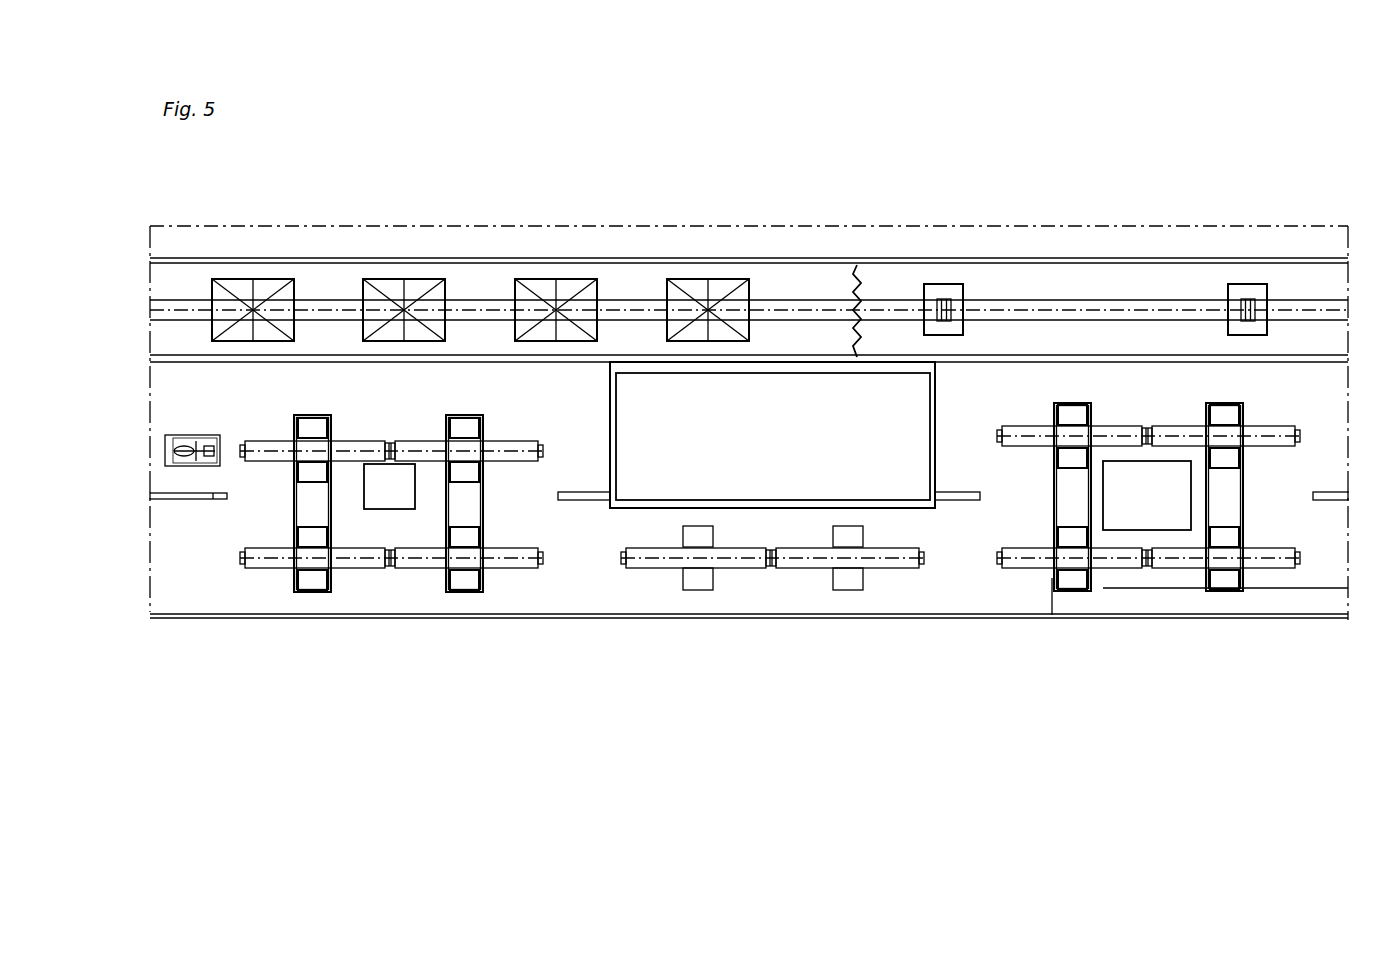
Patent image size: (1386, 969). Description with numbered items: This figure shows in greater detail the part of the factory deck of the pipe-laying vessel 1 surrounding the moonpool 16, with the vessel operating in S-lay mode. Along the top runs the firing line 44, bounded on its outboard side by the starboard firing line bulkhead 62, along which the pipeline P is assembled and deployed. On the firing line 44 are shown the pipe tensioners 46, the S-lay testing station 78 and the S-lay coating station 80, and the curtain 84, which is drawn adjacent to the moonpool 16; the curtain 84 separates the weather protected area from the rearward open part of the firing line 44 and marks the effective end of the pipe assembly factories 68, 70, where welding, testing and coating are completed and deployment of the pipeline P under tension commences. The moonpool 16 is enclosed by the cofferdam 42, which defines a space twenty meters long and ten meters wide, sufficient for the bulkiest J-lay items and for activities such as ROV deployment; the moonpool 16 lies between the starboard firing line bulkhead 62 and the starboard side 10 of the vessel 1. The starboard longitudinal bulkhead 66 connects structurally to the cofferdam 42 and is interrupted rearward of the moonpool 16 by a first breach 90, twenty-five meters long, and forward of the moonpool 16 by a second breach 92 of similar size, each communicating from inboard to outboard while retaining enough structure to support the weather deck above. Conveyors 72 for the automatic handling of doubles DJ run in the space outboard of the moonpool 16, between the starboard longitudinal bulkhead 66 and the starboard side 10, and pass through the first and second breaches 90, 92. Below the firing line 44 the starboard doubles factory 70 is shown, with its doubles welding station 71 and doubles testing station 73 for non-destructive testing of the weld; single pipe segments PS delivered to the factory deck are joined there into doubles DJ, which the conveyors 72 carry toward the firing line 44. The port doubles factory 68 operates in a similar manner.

The pipe-laying vessel 1 is at (1128, 128).
The starboard side 10 is at (917, 615).
The moonpool 16 is at (745, 437).
The cofferdam 42 is at (933, 450).
The firing line 44 is at (470, 310).
The pipe tensioners 46 is at (567, 292).
The starboard firing line bulkhead 62 is at (1366, 423).
The starboard longitudinal bulkhead 66 is at (210, 513).
The port doubles factory 68 is at (300, 199).
The starboard doubles factory 70 is at (438, 415).
The doubles welding station 71 is at (397, 484).
The conveyors 72 is at (475, 506).
The doubles testing station 73 is at (1157, 487).
The S-lay testing station 78 is at (1240, 295).
The S-lay coating station 80 is at (943, 293).
The curtain 84 is at (845, 266).
The first breach 90 is at (270, 510).
The second breach 92 is at (1010, 497).
The pipeline P is at (168, 304).
The single pipe segments PS is at (256, 449).
The doubles DJ is at (270, 560).